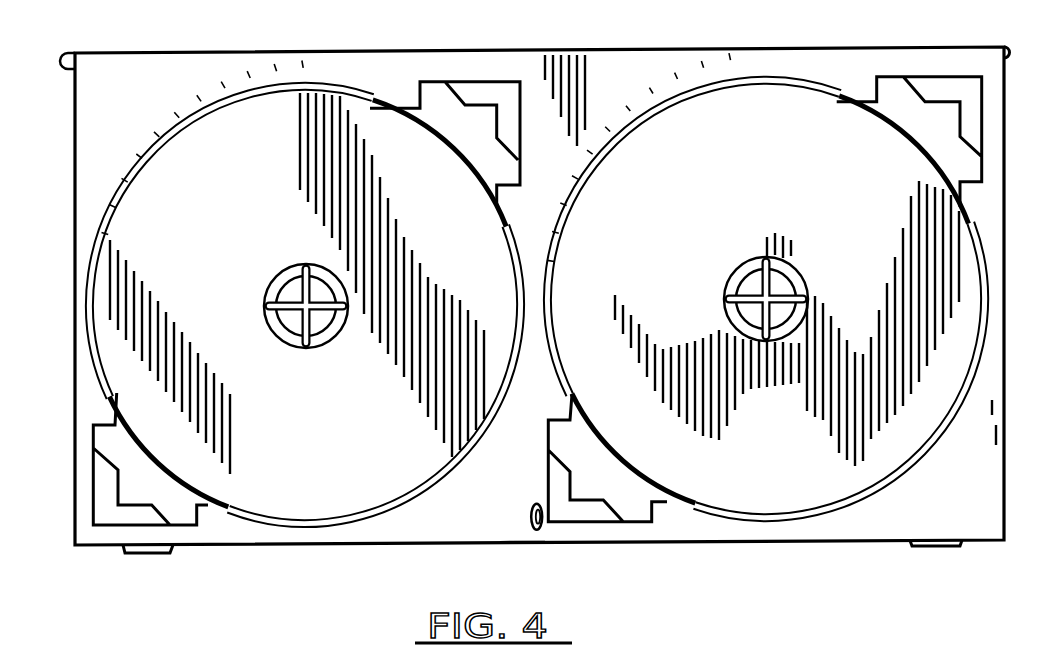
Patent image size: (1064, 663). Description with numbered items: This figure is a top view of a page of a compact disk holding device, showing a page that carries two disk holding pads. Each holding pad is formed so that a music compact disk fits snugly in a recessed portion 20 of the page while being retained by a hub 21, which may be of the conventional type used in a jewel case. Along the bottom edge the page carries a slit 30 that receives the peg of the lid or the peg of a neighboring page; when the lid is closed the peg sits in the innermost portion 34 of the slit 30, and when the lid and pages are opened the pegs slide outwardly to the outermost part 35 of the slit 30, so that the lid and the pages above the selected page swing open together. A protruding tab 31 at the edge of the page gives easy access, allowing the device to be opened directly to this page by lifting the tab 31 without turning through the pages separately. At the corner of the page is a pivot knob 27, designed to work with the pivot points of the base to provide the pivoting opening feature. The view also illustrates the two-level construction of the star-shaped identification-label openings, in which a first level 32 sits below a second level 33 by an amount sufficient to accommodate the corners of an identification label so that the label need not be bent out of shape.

The recessed portion 20 is at (735, 193).
The hub 21 is at (775, 288).
The pivot knob 27 is at (1010, 55).
The slit 30 is at (541, 523).
The protruding tab 31 is at (937, 545).
The first level 32 is at (110, 527).
The second level 33 is at (180, 533).
The innermost portion 34 is at (531, 508).
The outermost part 35 is at (530, 528).